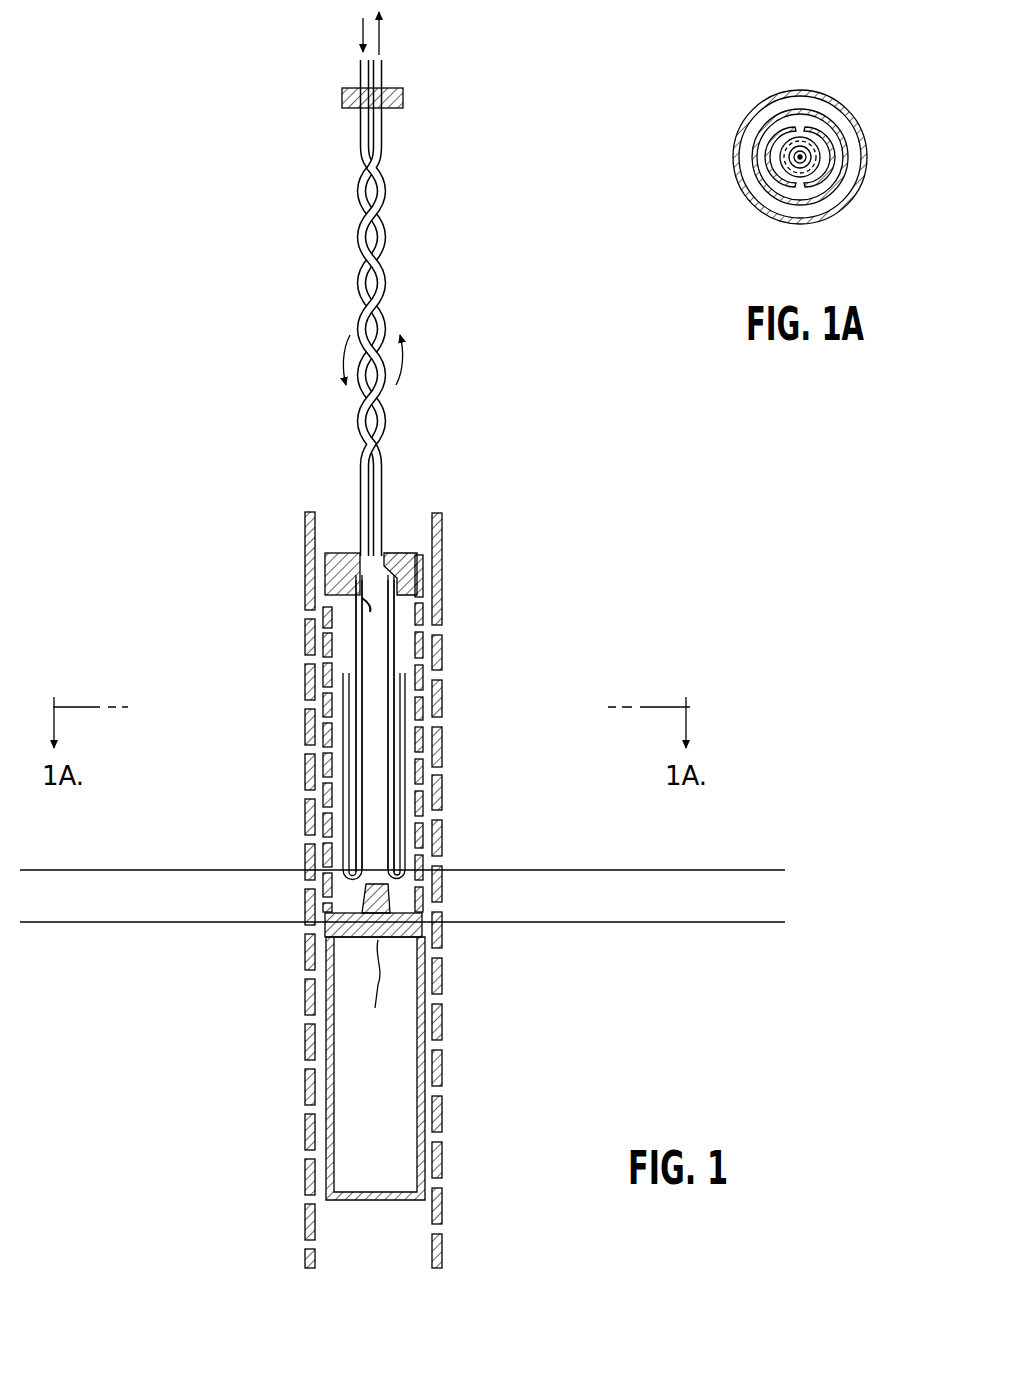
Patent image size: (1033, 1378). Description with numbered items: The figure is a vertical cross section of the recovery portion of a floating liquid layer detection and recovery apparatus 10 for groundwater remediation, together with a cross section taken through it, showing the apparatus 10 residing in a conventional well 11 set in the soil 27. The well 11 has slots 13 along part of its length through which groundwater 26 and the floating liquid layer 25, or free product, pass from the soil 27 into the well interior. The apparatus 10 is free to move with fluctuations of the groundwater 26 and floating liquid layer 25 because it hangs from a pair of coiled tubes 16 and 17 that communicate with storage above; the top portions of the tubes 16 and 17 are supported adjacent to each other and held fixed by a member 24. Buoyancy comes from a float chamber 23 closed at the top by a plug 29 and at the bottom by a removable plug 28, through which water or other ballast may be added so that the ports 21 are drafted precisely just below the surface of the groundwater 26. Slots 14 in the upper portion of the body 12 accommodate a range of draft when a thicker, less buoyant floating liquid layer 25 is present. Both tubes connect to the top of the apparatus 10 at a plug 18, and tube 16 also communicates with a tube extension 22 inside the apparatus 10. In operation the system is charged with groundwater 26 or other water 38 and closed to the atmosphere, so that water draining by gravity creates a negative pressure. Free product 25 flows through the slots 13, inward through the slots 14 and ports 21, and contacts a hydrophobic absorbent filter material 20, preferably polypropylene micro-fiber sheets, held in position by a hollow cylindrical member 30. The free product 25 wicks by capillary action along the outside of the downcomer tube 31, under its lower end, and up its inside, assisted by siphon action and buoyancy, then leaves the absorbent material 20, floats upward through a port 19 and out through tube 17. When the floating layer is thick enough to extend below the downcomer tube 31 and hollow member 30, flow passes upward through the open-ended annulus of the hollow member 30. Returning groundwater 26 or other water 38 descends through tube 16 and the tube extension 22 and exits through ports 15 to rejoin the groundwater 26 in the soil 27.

In FIG. 1, the floating liquid layer detection and recovery apparatus 10 is at (284, 577).
In FIG. 1, the well 11 is at (442, 584).
In FIG. 1A, the well 11 is at (843, 102).
In FIG. 1, the body 12 is at (420, 668).
In FIG. 1A, the body 12 is at (848, 165).
In FIG. 1, the slots 13 is at (443, 768).
In FIG. 1, the slots 14 is at (424, 805).
In FIG. 1, the ports 15 is at (436, 920).
In FIG. 1, the coiled tube 16 is at (360, 68).
In FIG. 1, the coiled tube 17 is at (383, 68).
In FIG. 1, the plug 18 is at (415, 552).
In FIG. 1, the port 19 is at (358, 632).
In FIG. 1, the hydrophobic absorbent filter material 20 is at (345, 738).
In FIG. 1A, the hydrophobic absorbent filter material 20 is at (772, 140).
In FIG. 1, the ports 21 is at (330, 872).
In FIG. 1, the tube extension 22 is at (330, 925).
In FIG. 1A, the tube extension 22 is at (790, 168).
In FIG. 1, the float chamber 23 is at (395, 1118).
In FIG. 1, the member 24 is at (342, 95).
In FIG. 1, the floating liquid layer 25 is at (112, 911).
In FIG. 1, the groundwater 26 is at (112, 1056).
In FIG. 1, the soil 27 is at (112, 671).
In FIG. 1, the plug 28 is at (395, 1205).
In FIG. 1, the plug 29 is at (371, 990).
In FIG. 1, the hollow cylindrical member 30 is at (400, 618).
In FIG. 1A, the hollow cylindrical member 30 is at (812, 180).
In FIG. 1, the downcomer tube 31 is at (358, 600).
In FIG. 1A, the downcomer tube 31 is at (799, 138).
In FIG. 1, the other water 38 is at (388, 580).